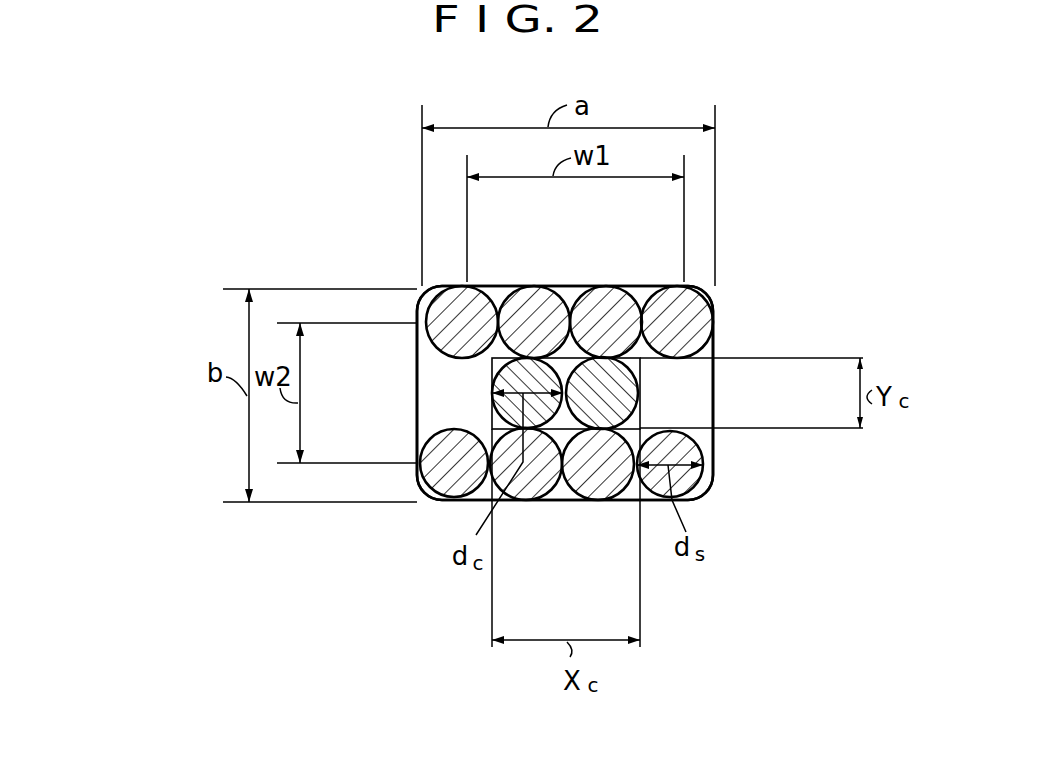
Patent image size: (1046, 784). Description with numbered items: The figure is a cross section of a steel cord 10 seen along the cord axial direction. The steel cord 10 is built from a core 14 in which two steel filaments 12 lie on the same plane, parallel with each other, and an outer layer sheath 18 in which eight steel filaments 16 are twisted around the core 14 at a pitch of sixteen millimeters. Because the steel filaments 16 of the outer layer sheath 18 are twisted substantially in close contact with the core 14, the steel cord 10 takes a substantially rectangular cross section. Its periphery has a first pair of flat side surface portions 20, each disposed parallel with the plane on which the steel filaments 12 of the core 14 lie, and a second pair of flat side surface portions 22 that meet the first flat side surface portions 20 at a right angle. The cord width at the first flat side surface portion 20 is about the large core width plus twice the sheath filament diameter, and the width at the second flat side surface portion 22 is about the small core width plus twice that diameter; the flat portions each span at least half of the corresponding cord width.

The steel cord 10 is at (352, 204).
The steel filament 12 is at (612, 392).
The core 14 is at (648, 375).
The steel filament 16 is at (608, 288).
The outer layer sheath 18 is at (539, 276).
The first flat side surface portion 20 is at (496, 287).
The second flat side surface portion 22 is at (418, 380).